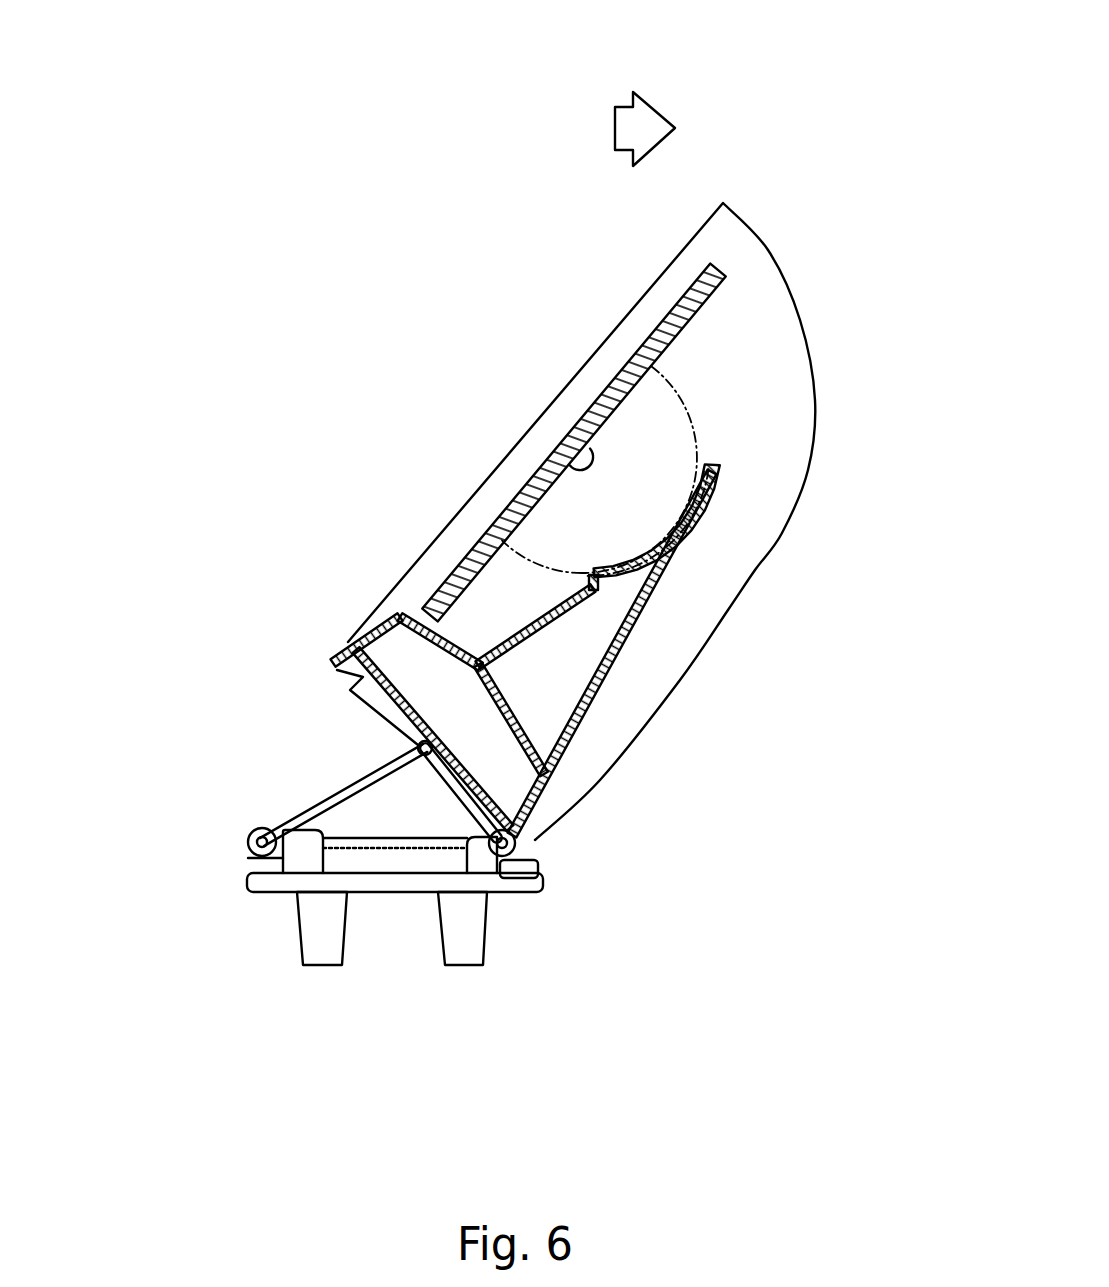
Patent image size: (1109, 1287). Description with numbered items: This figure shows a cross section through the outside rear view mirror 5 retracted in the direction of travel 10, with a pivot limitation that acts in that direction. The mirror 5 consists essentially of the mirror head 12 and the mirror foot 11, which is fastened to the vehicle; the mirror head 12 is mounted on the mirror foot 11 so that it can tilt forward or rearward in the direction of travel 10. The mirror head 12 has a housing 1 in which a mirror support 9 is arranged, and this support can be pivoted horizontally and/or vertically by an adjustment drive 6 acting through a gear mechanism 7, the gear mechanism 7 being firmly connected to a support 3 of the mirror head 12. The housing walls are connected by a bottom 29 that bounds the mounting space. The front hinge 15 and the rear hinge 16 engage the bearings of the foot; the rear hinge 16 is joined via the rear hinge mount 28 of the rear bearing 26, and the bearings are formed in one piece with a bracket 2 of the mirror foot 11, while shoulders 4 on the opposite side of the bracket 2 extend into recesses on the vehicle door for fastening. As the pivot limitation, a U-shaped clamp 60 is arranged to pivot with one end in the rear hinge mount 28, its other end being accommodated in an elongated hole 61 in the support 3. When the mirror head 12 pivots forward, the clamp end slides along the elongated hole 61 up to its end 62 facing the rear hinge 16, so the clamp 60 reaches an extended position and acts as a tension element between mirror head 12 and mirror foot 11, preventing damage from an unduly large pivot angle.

The housing 1 is at (755, 570).
The bracket 2 is at (518, 883).
The support 3 is at (597, 683).
The shoulders 4 is at (462, 935).
The outside rear view mirror 5 is at (463, 290).
The adjustment drive 6 is at (658, 408).
The gear mechanism 7 is at (710, 477).
The mirror support 9 is at (500, 538).
The direction of travel 10 is at (657, 130).
The mirror foot 11 is at (388, 915).
The mirror head 12 is at (452, 429).
The front hinge 15 is at (536, 878).
The rear hinge 16 is at (348, 676).
The rear bearing 26 is at (300, 845).
The rear hinge mount 28 is at (252, 851).
The bottom 29 is at (298, 621).
The clamp 60 is at (338, 802).
The elongated hole 61 is at (463, 798).
The end of the elongated hole 62 is at (400, 742).